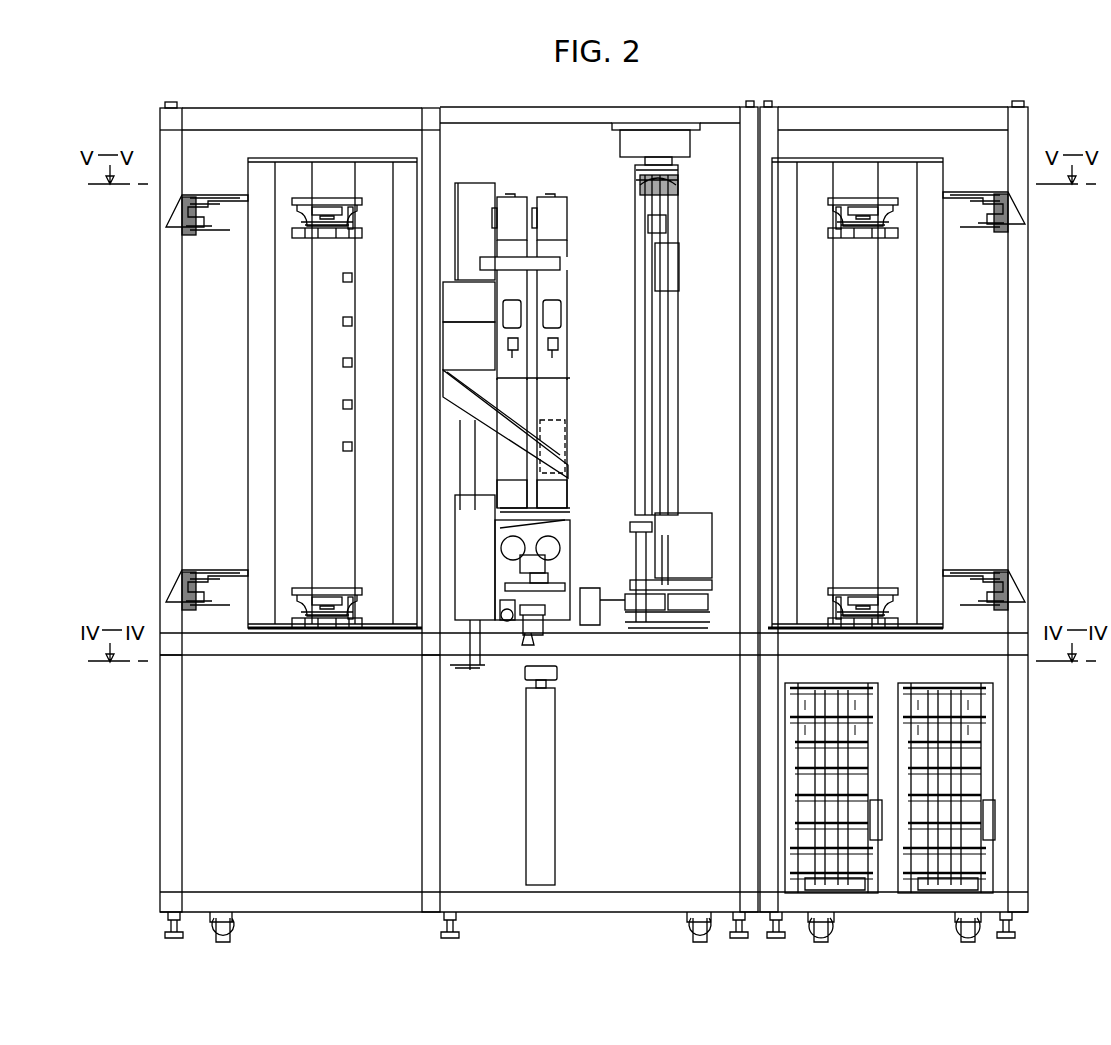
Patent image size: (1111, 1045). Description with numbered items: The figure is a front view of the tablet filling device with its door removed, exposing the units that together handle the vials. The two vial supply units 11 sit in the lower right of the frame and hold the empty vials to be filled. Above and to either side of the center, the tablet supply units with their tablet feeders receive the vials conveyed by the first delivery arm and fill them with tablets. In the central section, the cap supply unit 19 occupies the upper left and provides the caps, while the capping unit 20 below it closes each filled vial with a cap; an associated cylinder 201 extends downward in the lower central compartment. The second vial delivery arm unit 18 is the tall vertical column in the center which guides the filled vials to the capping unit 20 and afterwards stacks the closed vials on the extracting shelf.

The vial supply unit 11 is at (1005, 745).
The second vial delivery arm unit 18 is at (690, 438).
The cap supply unit 19 is at (514, 176).
The capping unit 20 is at (500, 683).
The cylinder 201 is at (548, 799).